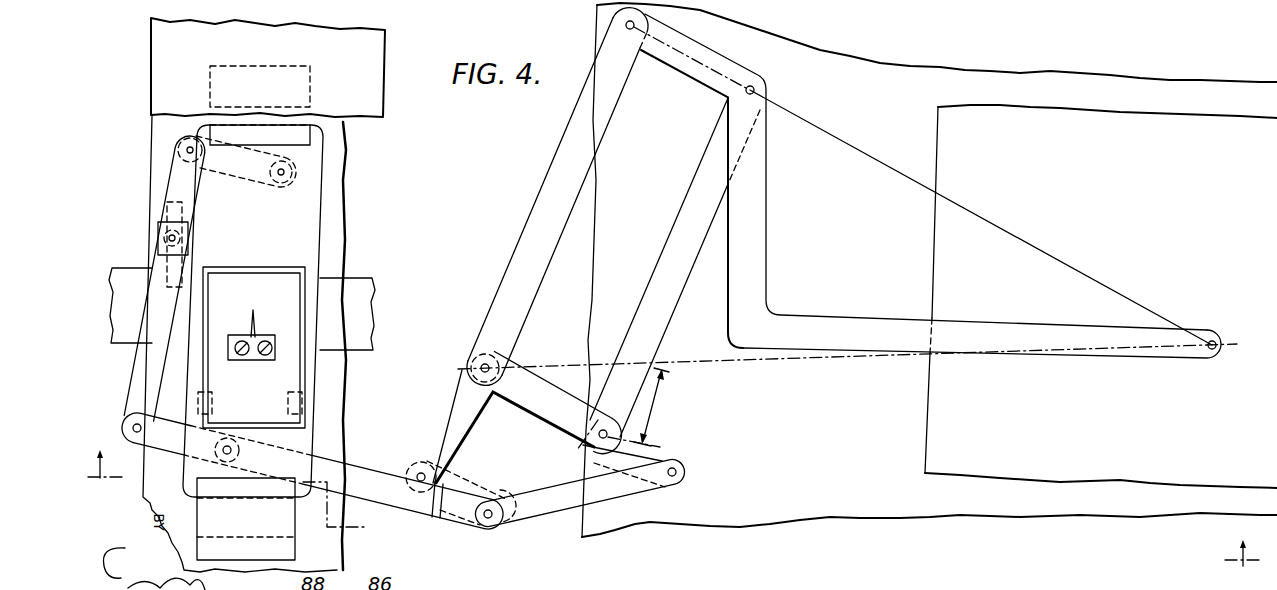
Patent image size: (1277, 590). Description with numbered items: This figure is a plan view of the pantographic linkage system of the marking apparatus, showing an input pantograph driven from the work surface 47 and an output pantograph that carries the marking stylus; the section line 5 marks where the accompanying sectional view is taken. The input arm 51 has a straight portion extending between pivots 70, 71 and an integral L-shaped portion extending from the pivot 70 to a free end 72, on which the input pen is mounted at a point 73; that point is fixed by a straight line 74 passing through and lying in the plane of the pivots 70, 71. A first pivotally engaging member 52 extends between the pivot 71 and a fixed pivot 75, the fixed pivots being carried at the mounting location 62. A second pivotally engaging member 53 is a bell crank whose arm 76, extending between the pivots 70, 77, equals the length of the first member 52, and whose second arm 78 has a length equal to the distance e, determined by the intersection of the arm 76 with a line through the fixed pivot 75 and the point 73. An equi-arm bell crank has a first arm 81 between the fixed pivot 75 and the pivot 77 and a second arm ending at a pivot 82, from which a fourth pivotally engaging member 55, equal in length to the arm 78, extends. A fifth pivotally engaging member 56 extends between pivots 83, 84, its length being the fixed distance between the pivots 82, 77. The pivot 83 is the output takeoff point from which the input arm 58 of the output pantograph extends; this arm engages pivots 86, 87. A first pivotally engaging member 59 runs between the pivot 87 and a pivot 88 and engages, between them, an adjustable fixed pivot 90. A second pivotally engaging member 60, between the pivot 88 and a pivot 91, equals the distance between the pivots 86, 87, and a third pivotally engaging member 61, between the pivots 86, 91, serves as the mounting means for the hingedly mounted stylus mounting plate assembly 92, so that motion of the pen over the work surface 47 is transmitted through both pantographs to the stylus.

The section line 5- 5 is at (675, 498).
The work surface 47 is at (1136, 229).
The input arm 51 is at (927, 205).
The first pivotally engaging member 52 is at (540, 199).
The second pivotally engaging member 53 is at (675, 267).
The fourth pivotally engaging member 55 is at (476, 491).
The fifth pivotally engaging member 56 is at (557, 509).
The input arm 58 is at (365, 470).
The first pivotally engaging member 59 is at (137, 372).
The second pivotally engaging member 60 is at (266, 188).
The third pivotally engaging member 61 is at (318, 220).
The mounting location 62 is at (463, 371).
The pivot 70 is at (754, 89).
The pivot 71 is at (636, 24).
The free end 72 is at (1168, 356).
The point 73 is at (1219, 340).
The straight line 74 is at (887, 168).
The fixed pivot 75 is at (477, 362).
The arm 76 is at (657, 344).
The pivot 77 is at (588, 440).
The second arm 78 is at (658, 449).
The first arm 81 is at (559, 397).
The pivot 82 is at (421, 473).
The pivot 83 is at (495, 530).
The pivot 84 is at (681, 471).
The pivot 86 is at (235, 452).
The pivot 87 is at (125, 422).
The pivot 88 is at (178, 152).
The fixed pivot 90 is at (165, 238).
The pivot 91 is at (285, 184).
The stylus mounting plate assembly 92 is at (294, 385).
The distance e is at (652, 407).